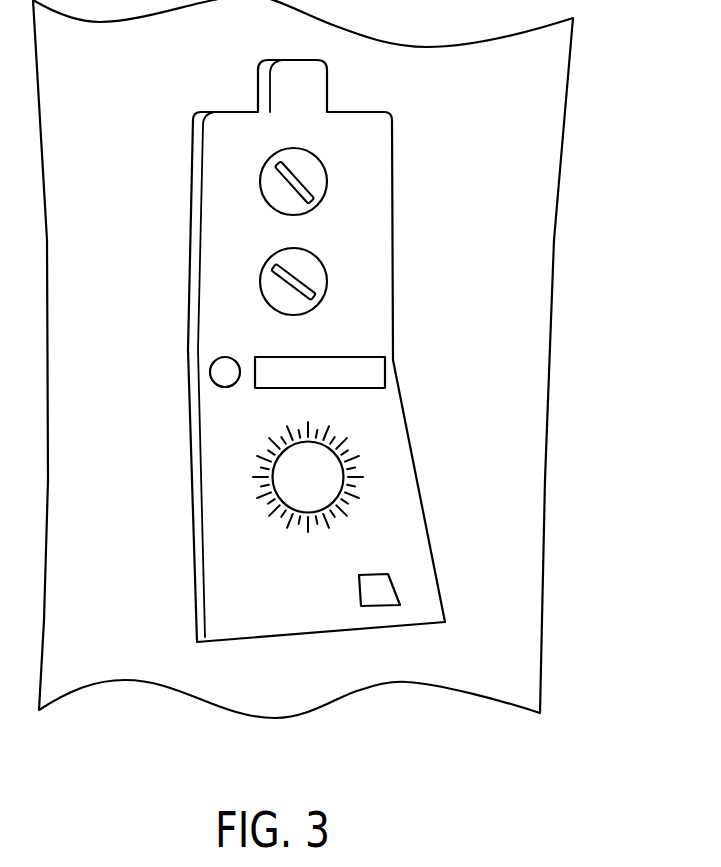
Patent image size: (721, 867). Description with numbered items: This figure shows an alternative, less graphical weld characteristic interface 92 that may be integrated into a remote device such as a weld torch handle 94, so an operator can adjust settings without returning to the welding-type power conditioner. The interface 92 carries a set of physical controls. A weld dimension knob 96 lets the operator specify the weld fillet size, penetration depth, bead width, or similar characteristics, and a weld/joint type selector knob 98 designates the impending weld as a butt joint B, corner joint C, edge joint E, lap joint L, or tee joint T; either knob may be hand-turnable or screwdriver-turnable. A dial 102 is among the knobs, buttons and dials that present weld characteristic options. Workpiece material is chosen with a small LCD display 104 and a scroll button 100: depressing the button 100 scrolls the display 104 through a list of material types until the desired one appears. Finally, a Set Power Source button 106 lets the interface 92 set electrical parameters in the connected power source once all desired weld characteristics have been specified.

The interface 92 is at (427, 322).
The weld torch handle 94 is at (518, 348).
The weld dimension knob 96 is at (372, 205).
The weld/joint type selector knob 98 is at (355, 287).
The scroll button 100 is at (212, 358).
The dial 102 is at (278, 543).
The LCD display 104 is at (370, 388).
The Set Power Source button 106 is at (400, 590).